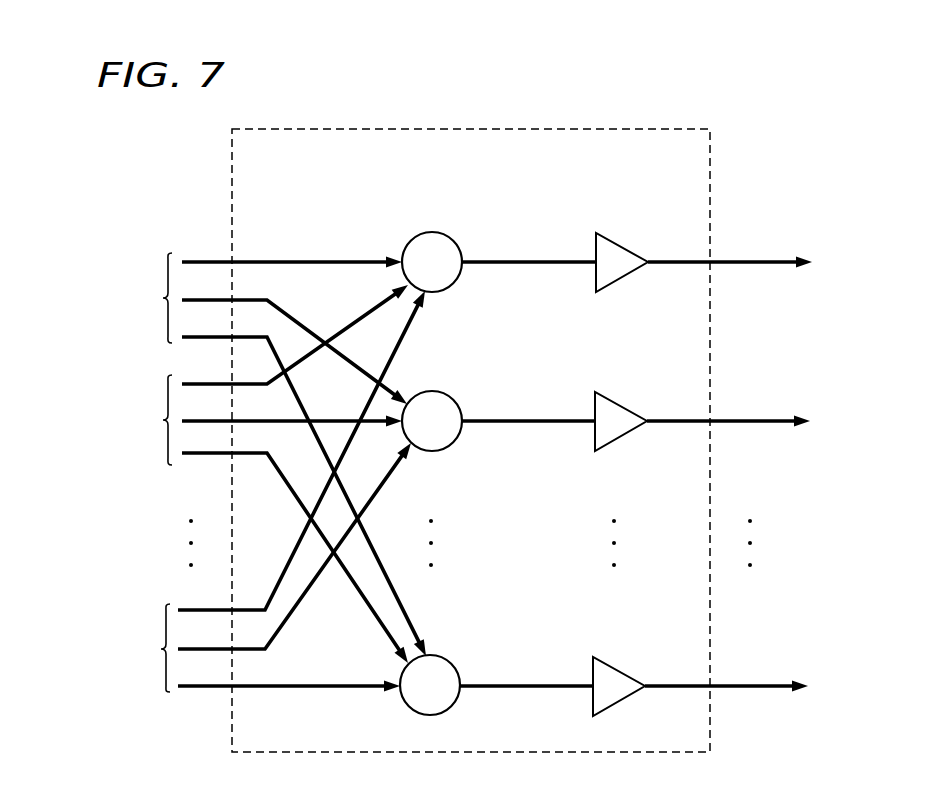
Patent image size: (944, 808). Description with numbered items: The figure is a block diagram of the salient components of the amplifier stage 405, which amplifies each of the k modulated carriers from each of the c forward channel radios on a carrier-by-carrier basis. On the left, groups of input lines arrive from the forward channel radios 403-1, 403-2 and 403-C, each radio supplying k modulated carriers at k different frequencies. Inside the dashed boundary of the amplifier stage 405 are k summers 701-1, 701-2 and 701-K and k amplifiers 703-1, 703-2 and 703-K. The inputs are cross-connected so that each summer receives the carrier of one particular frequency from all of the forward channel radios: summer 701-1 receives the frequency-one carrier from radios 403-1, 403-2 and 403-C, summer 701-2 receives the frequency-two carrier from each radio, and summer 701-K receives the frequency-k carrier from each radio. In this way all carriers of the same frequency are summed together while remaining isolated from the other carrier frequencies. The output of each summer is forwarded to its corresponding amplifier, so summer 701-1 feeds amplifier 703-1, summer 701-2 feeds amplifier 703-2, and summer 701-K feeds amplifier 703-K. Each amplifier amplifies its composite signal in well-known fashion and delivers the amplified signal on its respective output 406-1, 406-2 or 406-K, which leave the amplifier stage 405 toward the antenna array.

The amplifier stage 405 is at (312, 129).
The forward channel radio 403-1 is at (221, 454).
The forward channel radio 403-2 is at (212, 474).
The forward channel radio 403-C is at (220, 491).
The summer 701-1 is at (425, 233).
The summer 701-2 is at (442, 394).
The summer 701-K is at (453, 657).
The amplifier 703-1 is at (600, 238).
The amplifier 703-2 is at (618, 397).
The amplifier 703-K is at (613, 663).
The amplified signal output 406-1 is at (750, 260).
The amplified signal output 406-2 is at (750, 419).
The amplified signal output 406-K is at (737, 684).